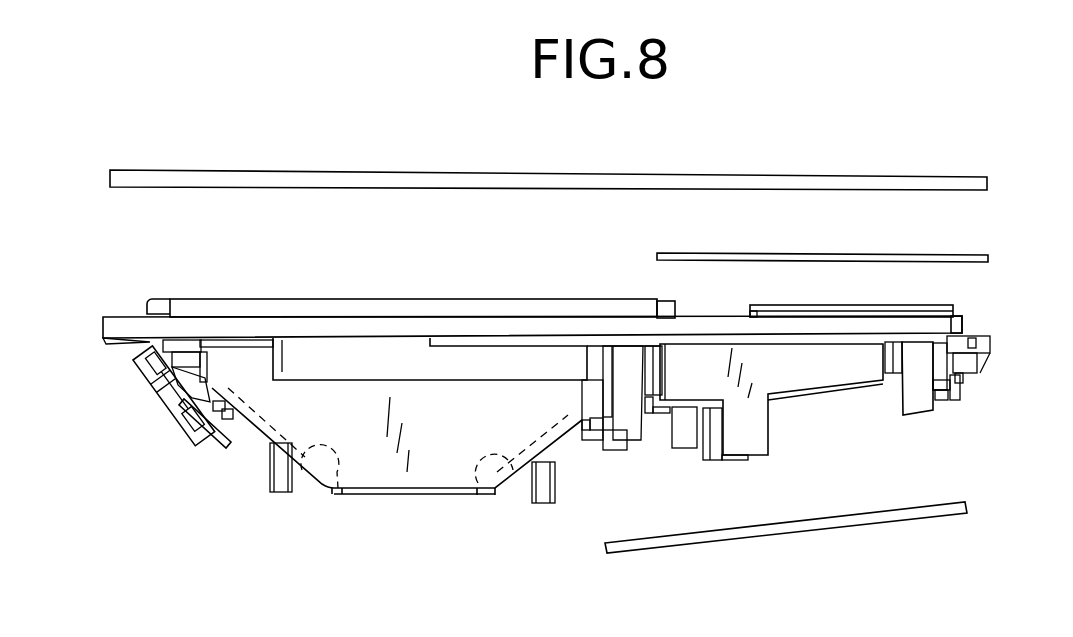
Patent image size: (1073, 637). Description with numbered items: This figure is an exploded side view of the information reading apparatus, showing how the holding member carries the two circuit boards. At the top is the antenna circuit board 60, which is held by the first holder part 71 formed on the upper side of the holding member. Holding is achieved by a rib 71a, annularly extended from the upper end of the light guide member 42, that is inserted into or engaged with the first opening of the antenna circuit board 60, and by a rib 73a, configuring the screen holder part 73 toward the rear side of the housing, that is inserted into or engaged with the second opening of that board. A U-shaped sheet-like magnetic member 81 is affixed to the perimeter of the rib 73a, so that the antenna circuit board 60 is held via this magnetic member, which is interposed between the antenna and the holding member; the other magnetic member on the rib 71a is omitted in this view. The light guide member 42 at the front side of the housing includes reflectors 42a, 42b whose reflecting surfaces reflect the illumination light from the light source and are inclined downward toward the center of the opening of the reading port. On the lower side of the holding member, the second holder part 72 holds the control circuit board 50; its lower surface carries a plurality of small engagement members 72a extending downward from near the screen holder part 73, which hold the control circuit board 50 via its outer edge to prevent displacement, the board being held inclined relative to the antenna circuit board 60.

The antenna circuit board 60 is at (466, 170).
The sheet-like magnetic member 81 is at (990, 257).
The control circuit board 50 is at (775, 537).
The first holder part 71 is at (411, 274).
The rib 71a is at (300, 299).
The screen holder part 73 is at (947, 306).
The rib 73a is at (962, 318).
The light guide member 42 is at (397, 495).
The reflector 42a is at (478, 485).
The reflector 42b is at (336, 496).
The second holder part 72 is at (963, 414).
The small engagement member 72a is at (616, 450).